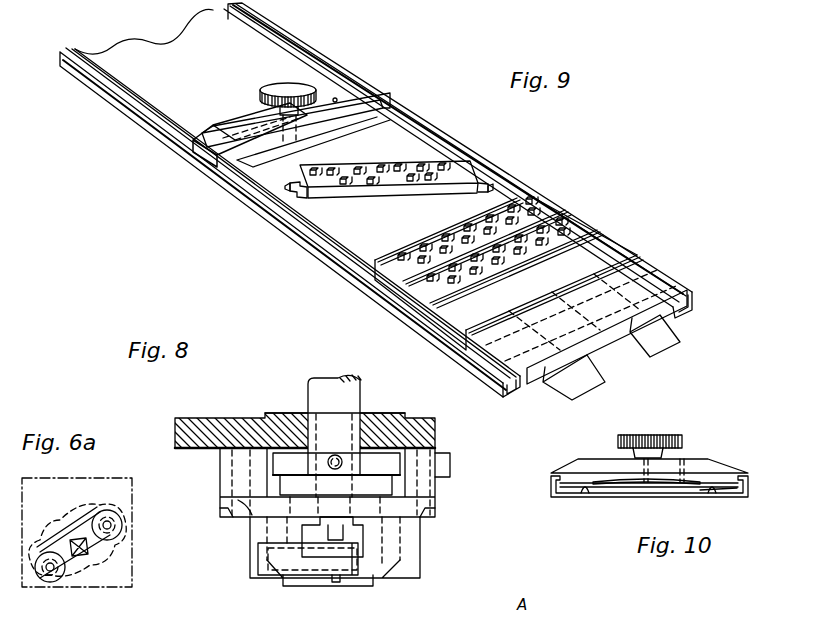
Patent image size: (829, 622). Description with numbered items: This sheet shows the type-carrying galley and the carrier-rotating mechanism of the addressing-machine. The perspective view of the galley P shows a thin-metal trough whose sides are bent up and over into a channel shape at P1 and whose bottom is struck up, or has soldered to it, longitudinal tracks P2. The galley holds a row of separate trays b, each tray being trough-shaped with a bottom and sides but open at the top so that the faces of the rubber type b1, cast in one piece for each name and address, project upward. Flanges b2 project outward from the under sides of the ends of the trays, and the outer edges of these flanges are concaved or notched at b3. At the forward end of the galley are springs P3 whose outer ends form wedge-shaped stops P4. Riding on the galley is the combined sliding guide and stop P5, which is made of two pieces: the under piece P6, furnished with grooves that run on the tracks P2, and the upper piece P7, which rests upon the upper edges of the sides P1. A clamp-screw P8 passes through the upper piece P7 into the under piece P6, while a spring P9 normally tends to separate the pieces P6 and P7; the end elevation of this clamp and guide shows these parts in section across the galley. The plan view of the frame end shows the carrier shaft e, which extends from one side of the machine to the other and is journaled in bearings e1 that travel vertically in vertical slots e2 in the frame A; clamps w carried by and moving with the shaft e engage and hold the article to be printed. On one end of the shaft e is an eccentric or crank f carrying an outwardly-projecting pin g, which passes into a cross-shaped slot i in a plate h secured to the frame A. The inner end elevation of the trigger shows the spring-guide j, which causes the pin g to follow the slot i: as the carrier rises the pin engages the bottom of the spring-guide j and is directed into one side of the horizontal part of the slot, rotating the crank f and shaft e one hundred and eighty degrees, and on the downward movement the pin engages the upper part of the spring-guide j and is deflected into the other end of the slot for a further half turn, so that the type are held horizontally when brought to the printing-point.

In FIG. 9, the galley P is at (152, 45).
In FIG. 10, the galley P is at (677, 497).
In FIG. 9, the galley sides P1 is at (148, 112).
In FIG. 10, the galley sides P1 is at (750, 481).
In FIG. 9, the tracks P2 is at (150, 86).
In FIG. 10, the tracks P2 is at (583, 497).
In FIG. 9, the springs P3 is at (530, 305).
In FIG. 9, the wedge-shaped stops P4 is at (665, 343).
In FIG. 9, the combined sliding guide and stop P5 is at (370, 88).
In FIG. 10, the combined sliding guide and stop P5 is at (713, 458).
In FIG. 9, the under piece P6 is at (345, 128).
In FIG. 10, the under piece P6 is at (733, 488).
In FIG. 9, the upper piece P7 is at (247, 123).
In FIG. 10, the upper piece P7 is at (588, 464).
In FIG. 9, the clamp-screw P8 is at (285, 88).
In FIG. 10, the clamp-screw P8 is at (668, 433).
In FIG. 10, the spring P9 is at (628, 487).
In FIG. 9, the tray b is at (390, 193).
In FIG. 9, the type b1 is at (465, 228).
In FIG. 9, the flanges b2 is at (293, 197).
In FIG. 9, the notches b3 is at (288, 188).
In FIG. 8, the frame A is at (192, 420).
In FIG. 8, the shaft e is at (342, 374).
In FIG. 8, the bearings e1 is at (387, 413).
In FIG. 8, the vertical slots e2 is at (305, 413).
In FIG. 8, the clamps w is at (455, 458).
In FIG. 8, the eccentric or crank f is at (383, 485).
In FIG. 8, the plate h is at (220, 505).
In FIG. 6A, the plate h is at (172, 500).
In FIG. 8, the cross-shaped slot i is at (260, 522).
In FIG. 6A, the cross-shaped slot i is at (108, 557).
In FIG. 8, the spring-guide j is at (303, 530).
In FIG. 6A, the spring-guide j is at (110, 545).
In FIG. 8, the pin g is at (347, 538).